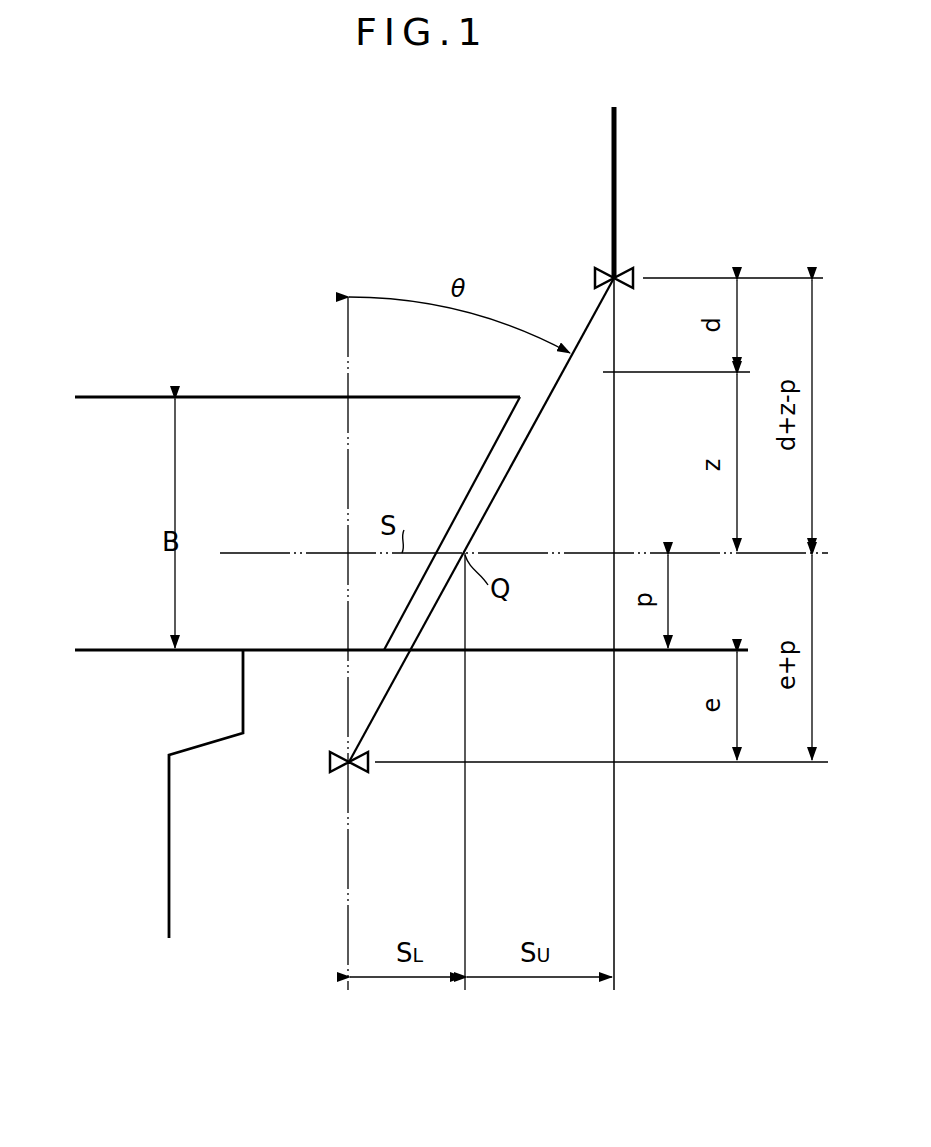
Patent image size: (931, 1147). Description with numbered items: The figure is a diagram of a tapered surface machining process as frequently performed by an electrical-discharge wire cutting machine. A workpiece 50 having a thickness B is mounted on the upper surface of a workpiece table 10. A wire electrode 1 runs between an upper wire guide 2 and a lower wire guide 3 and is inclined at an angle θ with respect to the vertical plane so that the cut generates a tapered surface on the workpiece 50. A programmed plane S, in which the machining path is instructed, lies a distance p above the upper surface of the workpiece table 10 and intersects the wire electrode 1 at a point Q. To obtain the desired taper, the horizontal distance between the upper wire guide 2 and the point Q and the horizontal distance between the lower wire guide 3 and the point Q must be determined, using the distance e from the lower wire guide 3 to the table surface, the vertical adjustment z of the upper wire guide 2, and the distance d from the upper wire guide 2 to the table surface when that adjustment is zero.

The wire electrode 1 is at (614, 152).
The upper wire guide 2 is at (628, 270).
The lower wire guide 3 is at (340, 775).
The workpiece table 10 is at (205, 723).
The workpiece 50 is at (120, 422).